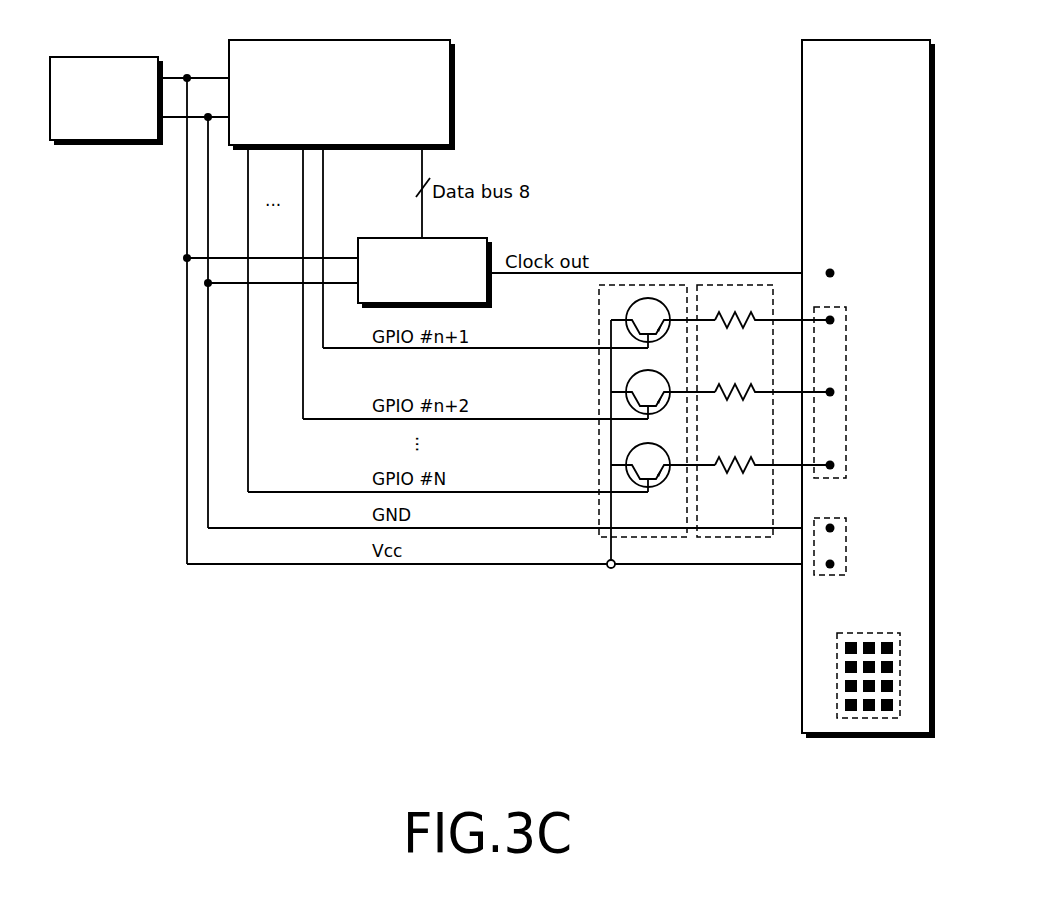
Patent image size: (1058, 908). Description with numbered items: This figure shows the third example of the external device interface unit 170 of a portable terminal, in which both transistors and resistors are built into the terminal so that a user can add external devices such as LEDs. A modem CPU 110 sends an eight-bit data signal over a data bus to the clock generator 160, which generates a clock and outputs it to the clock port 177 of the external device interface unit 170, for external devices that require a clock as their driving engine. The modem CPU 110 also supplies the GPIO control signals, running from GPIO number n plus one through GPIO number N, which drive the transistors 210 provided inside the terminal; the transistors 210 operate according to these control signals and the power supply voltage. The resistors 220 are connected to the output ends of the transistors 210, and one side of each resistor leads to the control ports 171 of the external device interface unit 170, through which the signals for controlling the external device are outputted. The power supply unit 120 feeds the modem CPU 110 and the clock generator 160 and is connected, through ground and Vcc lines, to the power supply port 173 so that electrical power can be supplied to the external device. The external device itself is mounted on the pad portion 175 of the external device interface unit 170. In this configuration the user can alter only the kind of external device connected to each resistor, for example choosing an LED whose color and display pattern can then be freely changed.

The modem CPU 110 is at (353, 40).
The power supply unit 120 is at (108, 57).
The clock generator 160 is at (447, 238).
The external device interface unit 170 is at (868, 40).
The control ports 171 is at (846, 405).
The power supply port 173 is at (846, 548).
The pad portion 175 is at (837, 678).
The clock port 177 is at (833, 270).
The transistors 210 is at (652, 285).
The resistors 220 is at (732, 285).